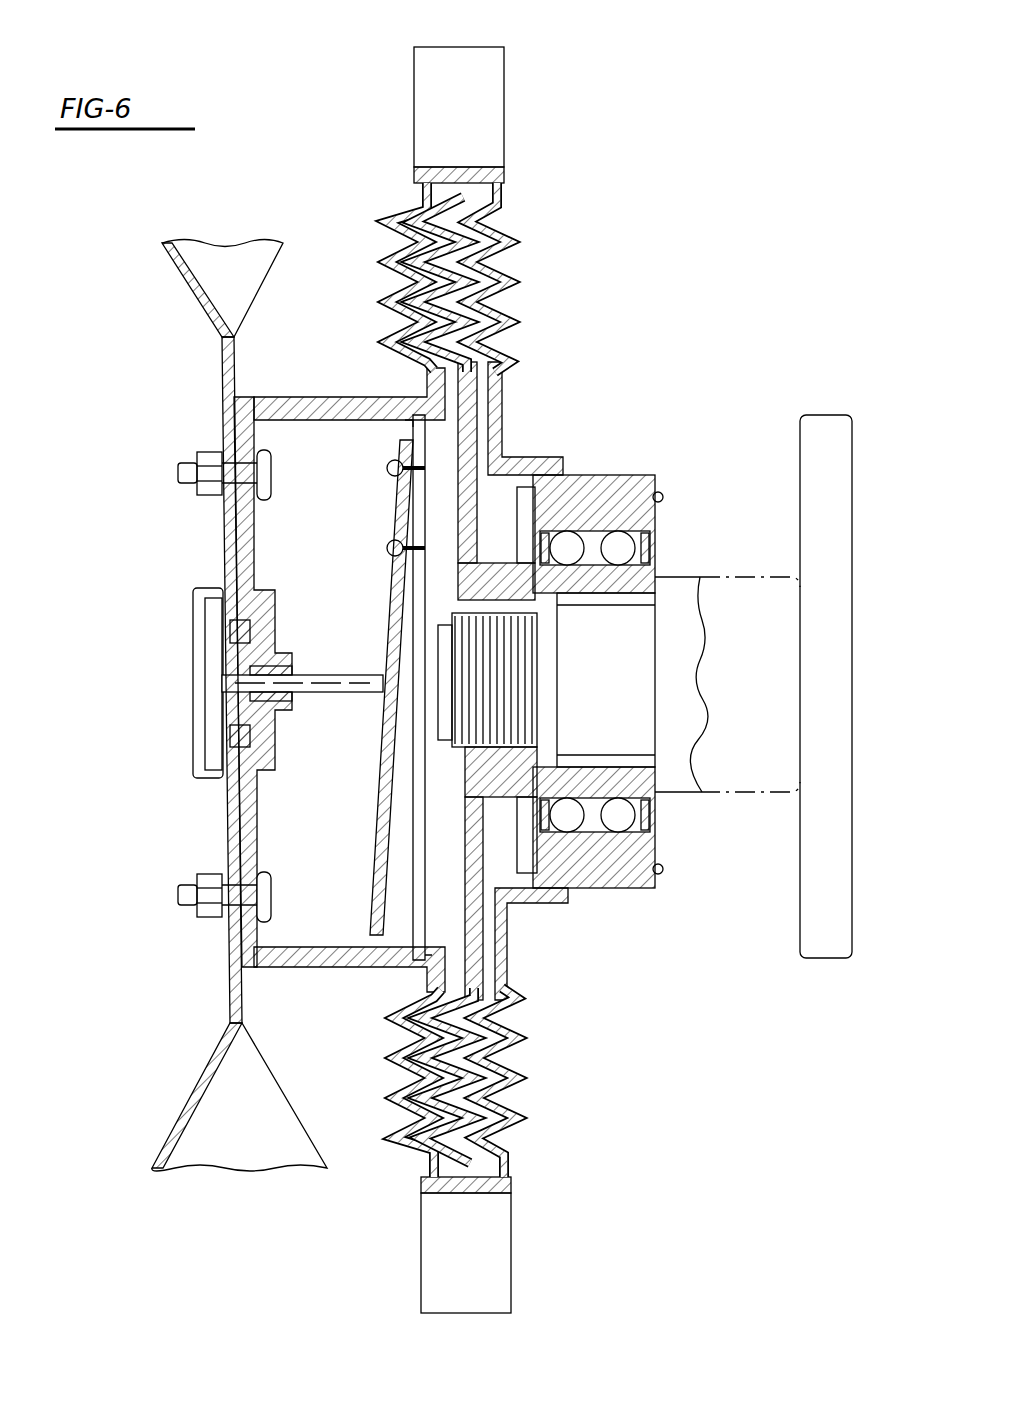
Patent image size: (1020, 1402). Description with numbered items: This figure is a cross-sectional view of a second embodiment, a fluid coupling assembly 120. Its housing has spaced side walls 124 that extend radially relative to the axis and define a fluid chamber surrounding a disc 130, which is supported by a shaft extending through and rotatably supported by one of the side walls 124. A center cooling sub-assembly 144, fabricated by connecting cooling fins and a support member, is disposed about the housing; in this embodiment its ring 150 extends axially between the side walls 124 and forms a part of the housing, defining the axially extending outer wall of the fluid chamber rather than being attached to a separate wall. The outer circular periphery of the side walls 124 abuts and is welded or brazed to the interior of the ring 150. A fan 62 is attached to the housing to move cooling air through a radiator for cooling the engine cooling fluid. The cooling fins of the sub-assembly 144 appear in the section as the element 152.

The fan 62 is at (220, 295).
The fluid coupling assembly 120 is at (700, 330).
The side walls 124 is at (387, 260).
The disc 130 is at (470, 280).
The center cooling sub-assembly 144 is at (400, 98).
The ring 150 is at (483, 168).
The stop block 152 is at (497, 88).